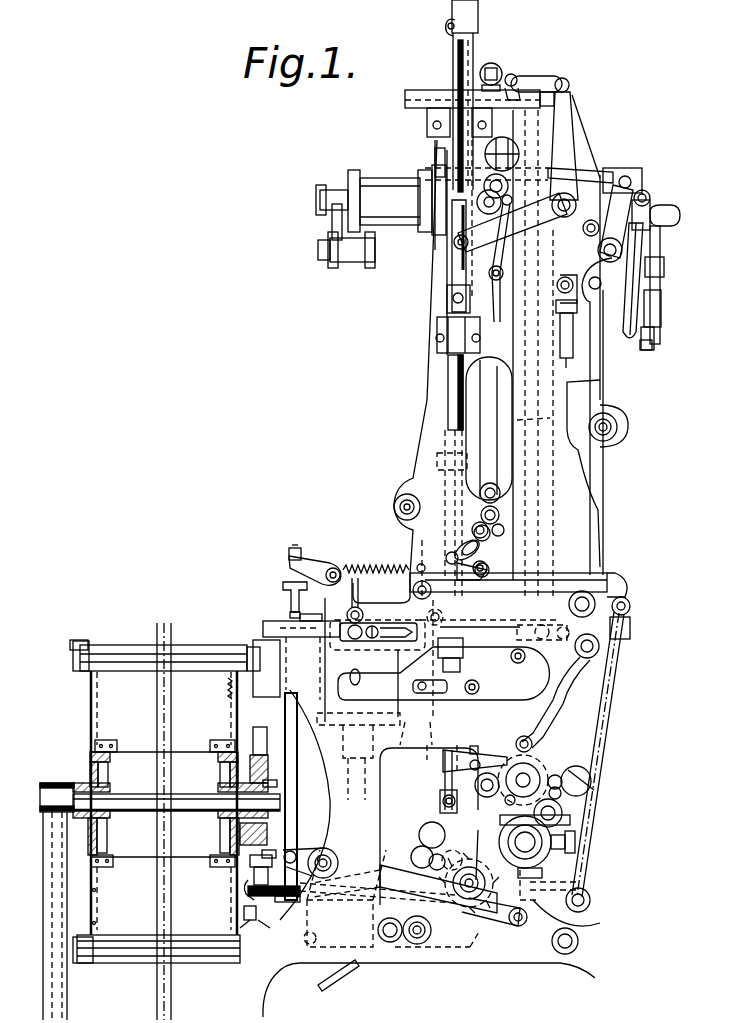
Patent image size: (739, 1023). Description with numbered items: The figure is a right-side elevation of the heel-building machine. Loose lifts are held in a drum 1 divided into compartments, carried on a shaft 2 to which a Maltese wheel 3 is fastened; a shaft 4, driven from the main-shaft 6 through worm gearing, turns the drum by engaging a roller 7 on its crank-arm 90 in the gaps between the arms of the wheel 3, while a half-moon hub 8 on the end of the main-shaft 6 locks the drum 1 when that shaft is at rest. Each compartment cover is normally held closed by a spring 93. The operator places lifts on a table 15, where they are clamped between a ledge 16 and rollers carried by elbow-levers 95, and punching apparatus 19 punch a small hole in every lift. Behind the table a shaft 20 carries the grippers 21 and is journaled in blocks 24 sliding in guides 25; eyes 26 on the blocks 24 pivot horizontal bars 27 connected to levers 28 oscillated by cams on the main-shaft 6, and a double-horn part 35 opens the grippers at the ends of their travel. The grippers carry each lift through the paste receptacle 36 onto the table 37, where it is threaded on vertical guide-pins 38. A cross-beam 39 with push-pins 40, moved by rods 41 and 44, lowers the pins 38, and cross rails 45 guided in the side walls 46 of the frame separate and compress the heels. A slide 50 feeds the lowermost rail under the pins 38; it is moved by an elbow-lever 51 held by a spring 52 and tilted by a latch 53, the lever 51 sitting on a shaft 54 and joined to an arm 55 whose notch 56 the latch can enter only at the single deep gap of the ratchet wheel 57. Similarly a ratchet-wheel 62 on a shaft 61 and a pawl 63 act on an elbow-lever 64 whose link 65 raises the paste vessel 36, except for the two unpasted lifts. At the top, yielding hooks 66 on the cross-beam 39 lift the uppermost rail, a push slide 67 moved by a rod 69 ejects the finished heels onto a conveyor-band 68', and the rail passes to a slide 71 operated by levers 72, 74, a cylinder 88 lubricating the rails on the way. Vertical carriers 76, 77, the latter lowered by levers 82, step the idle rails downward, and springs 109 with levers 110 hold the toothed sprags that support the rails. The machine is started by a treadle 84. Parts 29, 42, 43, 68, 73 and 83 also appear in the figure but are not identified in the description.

The drum 1 is at (105, 700).
The shaft 2 is at (128, 800).
The Maltese wheel 3 is at (262, 760).
The shaft 4 is at (278, 898).
The main-shaft 6 is at (537, 858).
The roller 7 is at (250, 868).
The half-moon like hub 8 is at (253, 898).
The table 15 is at (268, 633).
The ledge 16 is at (268, 627).
The punching apparatus 19 is at (292, 600).
The shaft 20 is at (378, 621).
The grippers 21 is at (413, 592).
The blocks 24 is at (340, 636).
The guides 25 is at (385, 619).
The eyes 26 is at (335, 655).
The horizontal bars 27 is at (512, 652).
The levers 28 is at (498, 682).
The roller 29 is at (469, 783).
The double-horn shaped part 35 is at (401, 619).
The paste receptacle 36 is at (343, 680).
The table 37 is at (468, 632).
The vertical guide-pins 38 is at (445, 482).
The cross-beam 39 is at (478, 12).
The push-pins 40 is at (468, 50).
The rods 41 is at (455, 60).
The lever 42 is at (452, 260).
The lever 43 is at (555, 222).
The rods 44 is at (625, 280).
The cross rails 45 is at (437, 460).
The side walls 46 is at (428, 382).
The slide 50 is at (545, 622).
The elbow-lever 51 is at (540, 740).
The spring 52 is at (478, 738).
The latch 53 is at (598, 764).
The shaft 54 is at (550, 782).
The arm 55 is at (535, 752).
The notch 56 is at (538, 765).
The ratchet wheel 57 is at (533, 810).
The shaft 61 is at (470, 903).
The ratchet-wheel 62 is at (475, 866).
The pawl 63 is at (460, 858).
The elbow-lever 64 is at (385, 856).
The link 65 is at (362, 818).
The yielding hooks 66 is at (447, 36).
The push slide 67 is at (553, 170).
The arm 68 is at (615, 233).
The conveyor-band 68' is at (381, 209).
The rod 69 is at (650, 350).
The slide 71 is at (512, 88).
The lever 72 is at (538, 79).
The strut 73 is at (572, 126).
The lever 74 is at (655, 302).
The vertical carrier 76 is at (600, 413).
The vertical carriers 77 is at (592, 428).
The levers 82 is at (566, 360).
The rod 83 is at (590, 300).
The treadle 84 is at (322, 983).
The cylinder 88 is at (496, 66).
The crank-arm 90 is at (293, 850).
The spring 93 is at (230, 686).
The elbow-levers 95 is at (78, 644).
The springs 109 is at (375, 566).
The levers 110 is at (421, 562).